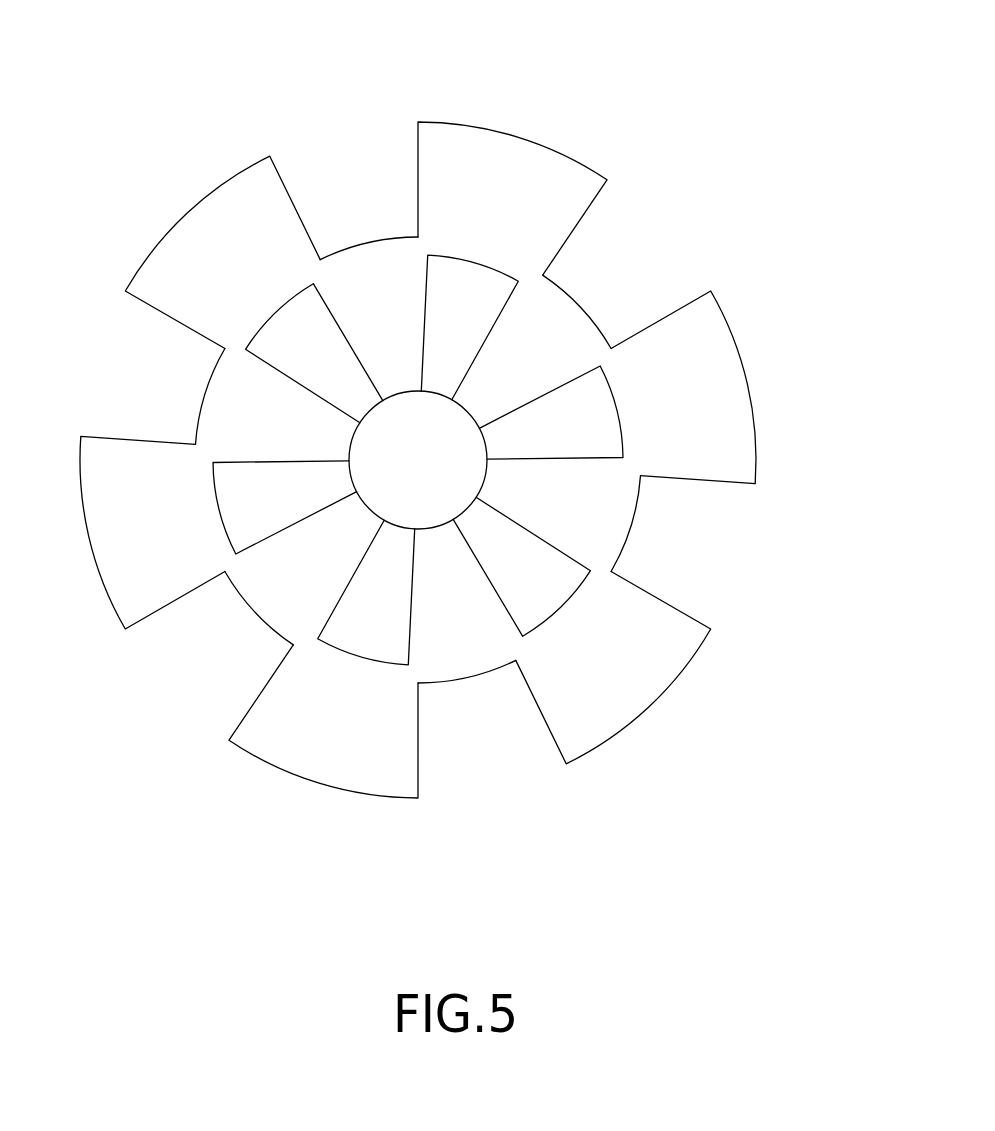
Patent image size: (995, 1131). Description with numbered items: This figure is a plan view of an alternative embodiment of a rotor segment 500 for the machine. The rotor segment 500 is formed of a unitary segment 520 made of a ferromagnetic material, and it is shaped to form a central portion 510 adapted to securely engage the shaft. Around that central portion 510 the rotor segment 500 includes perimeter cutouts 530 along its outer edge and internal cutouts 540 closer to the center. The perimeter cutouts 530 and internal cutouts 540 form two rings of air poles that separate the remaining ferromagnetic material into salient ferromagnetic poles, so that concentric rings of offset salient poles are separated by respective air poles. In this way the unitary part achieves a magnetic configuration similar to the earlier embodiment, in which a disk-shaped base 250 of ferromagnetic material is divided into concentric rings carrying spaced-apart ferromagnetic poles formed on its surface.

The rotor segment 500 is at (460, 428).
The central portion 510 is at (437, 450).
The unitary segment 520 is at (217, 251).
The perimeter cutouts 530 is at (338, 168).
The internal cutouts 540 is at (608, 440).
The disk-shaped base 250 is at (620, 683).